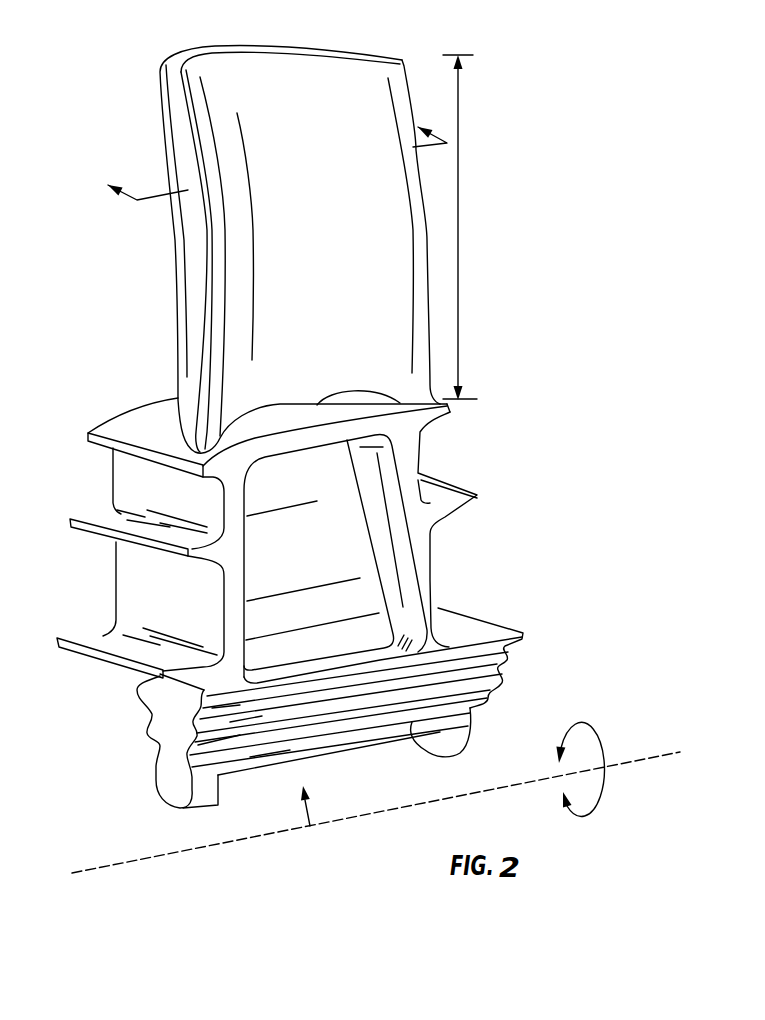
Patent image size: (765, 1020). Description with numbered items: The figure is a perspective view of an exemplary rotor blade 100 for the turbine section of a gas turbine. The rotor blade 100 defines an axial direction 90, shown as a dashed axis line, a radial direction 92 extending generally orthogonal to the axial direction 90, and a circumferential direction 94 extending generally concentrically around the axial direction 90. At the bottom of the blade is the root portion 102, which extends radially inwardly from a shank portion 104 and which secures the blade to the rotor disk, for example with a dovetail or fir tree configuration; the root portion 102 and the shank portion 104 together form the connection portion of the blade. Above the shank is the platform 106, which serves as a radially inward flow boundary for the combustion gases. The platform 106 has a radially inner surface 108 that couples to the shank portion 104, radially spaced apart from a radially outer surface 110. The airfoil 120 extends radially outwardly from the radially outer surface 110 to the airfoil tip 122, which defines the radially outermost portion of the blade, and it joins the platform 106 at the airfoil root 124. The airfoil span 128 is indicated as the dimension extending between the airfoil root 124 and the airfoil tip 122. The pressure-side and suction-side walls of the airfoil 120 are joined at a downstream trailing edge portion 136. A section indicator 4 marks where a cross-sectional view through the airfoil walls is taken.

The rotor blade 100 is at (541, 272).
The root portion 102 is at (172, 722).
The shank portion 104 is at (140, 603).
The platform 106 is at (86, 437).
The radially inner surface 108 is at (449, 412).
The radially outer surface 110 is at (123, 428).
The airfoil 120 is at (268, 208).
The airfoil tip 122 is at (207, 60).
The airfoil root 124 is at (400, 403).
The airfoil span 128 is at (459, 219).
The trailing edge portion 136 is at (402, 70).
The axial direction 90 is at (251, 838).
The radial direction 92 is at (311, 814).
The circumferential direction 94 is at (598, 742).
The section line 4 is at (277, 146).